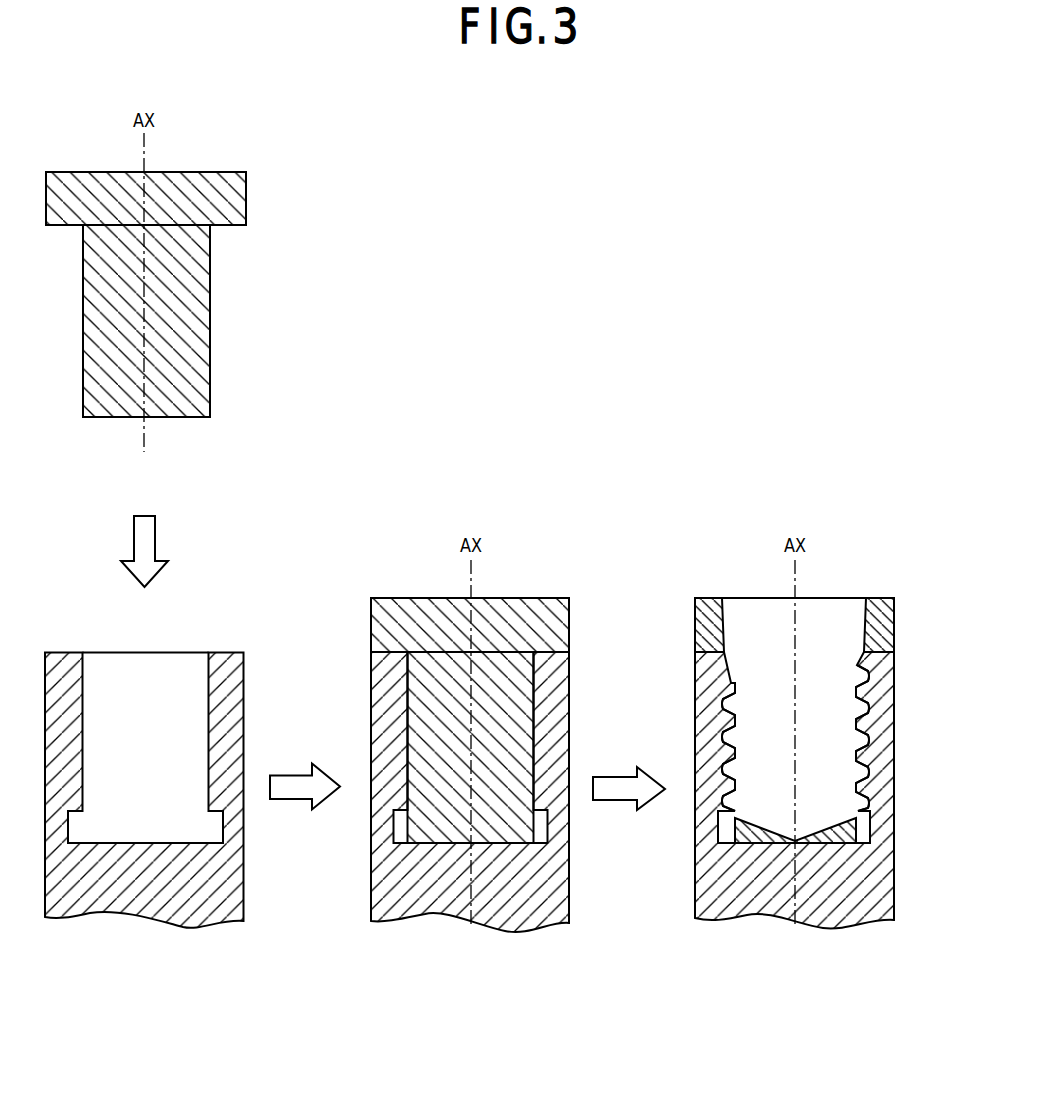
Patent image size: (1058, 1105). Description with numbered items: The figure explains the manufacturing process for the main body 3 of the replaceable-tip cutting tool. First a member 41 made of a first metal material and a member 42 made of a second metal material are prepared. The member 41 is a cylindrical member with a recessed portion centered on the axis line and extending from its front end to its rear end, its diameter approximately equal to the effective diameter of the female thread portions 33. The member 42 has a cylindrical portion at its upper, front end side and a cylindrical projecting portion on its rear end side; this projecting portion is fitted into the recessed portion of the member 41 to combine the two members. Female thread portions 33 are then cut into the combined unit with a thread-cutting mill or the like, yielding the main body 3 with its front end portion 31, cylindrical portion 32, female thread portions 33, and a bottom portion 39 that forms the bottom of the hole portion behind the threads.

The main body 3 is at (796, 700).
The front end portion 31 is at (872, 624).
The cylindrical portion 32 is at (872, 731).
The female thread portions 33 is at (848, 685).
The bottom portion 39 is at (834, 833).
The member 41 is at (222, 745).
The member 42 is at (210, 200).